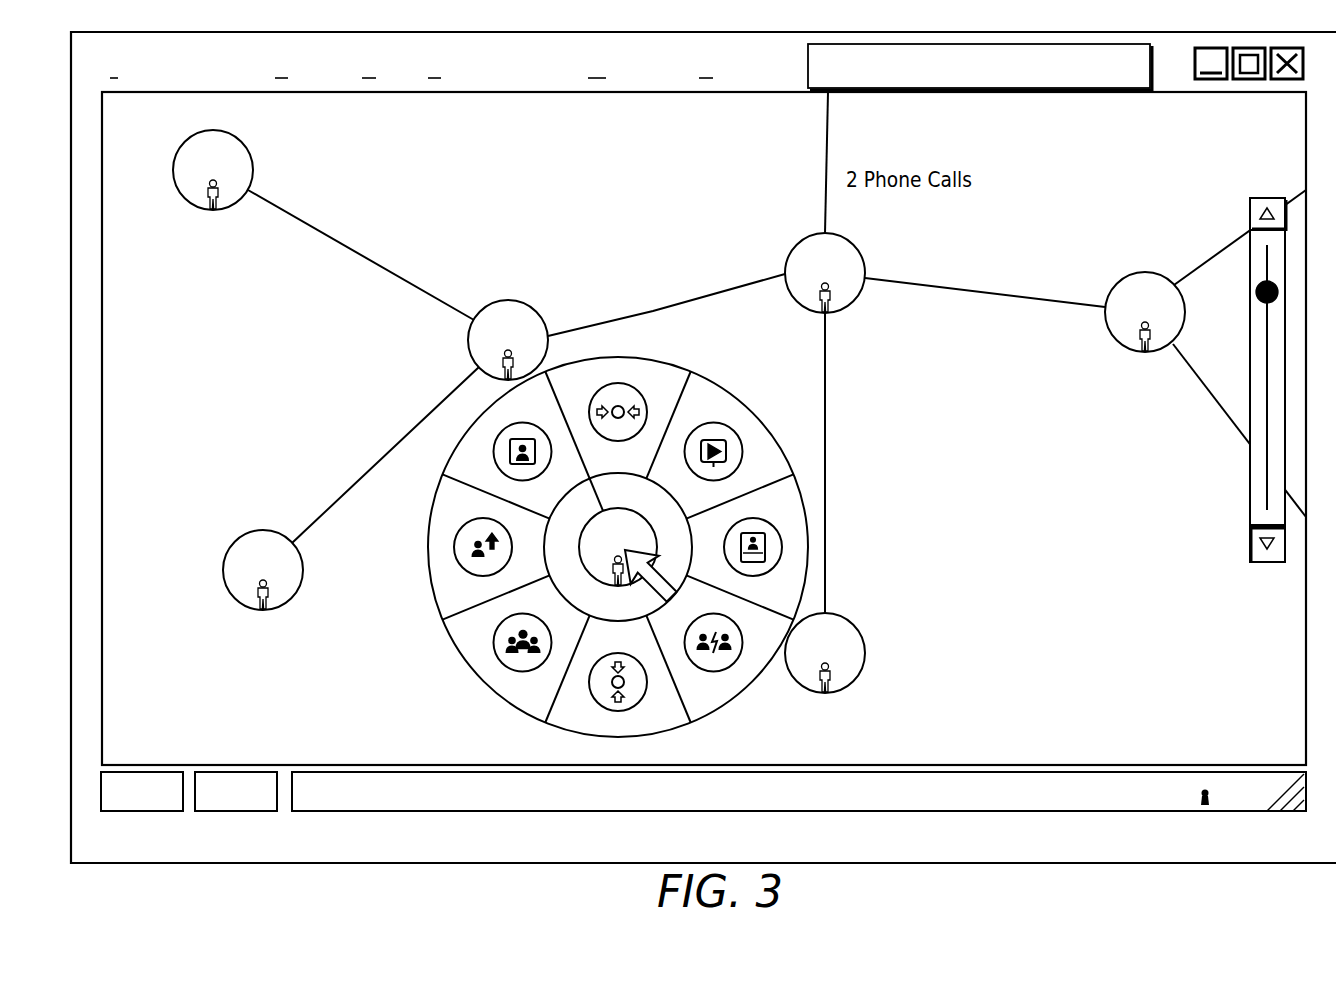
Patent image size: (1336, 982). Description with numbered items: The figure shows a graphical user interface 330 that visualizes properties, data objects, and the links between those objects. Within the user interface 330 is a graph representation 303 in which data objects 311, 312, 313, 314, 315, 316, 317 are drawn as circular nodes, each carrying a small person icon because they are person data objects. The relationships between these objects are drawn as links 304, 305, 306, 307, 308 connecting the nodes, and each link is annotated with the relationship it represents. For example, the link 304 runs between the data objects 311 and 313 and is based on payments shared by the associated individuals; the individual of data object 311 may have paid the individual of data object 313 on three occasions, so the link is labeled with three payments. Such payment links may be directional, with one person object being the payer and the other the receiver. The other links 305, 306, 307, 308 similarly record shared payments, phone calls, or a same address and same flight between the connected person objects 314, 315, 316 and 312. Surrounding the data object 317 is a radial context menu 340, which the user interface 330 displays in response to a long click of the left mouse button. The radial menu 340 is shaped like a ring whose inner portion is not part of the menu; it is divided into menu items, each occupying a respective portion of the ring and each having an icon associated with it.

The graph representation 303 is at (965, 723).
The link 304 is at (825, 551).
The link 305 is at (653, 313).
The link 306 is at (385, 458).
The link 307 is at (408, 267).
The link 308 is at (957, 287).
The person data object 311 is at (825, 273).
The data object 312 is at (1145, 312).
The person data object 313 is at (825, 653).
The data object 314 is at (508, 340).
The data object 315 is at (263, 570).
The data object 316 is at (213, 170).
The data object 317 is at (628, 555).
The user interface 330 is at (878, 31).
The radial context menu 340 is at (457, 647).